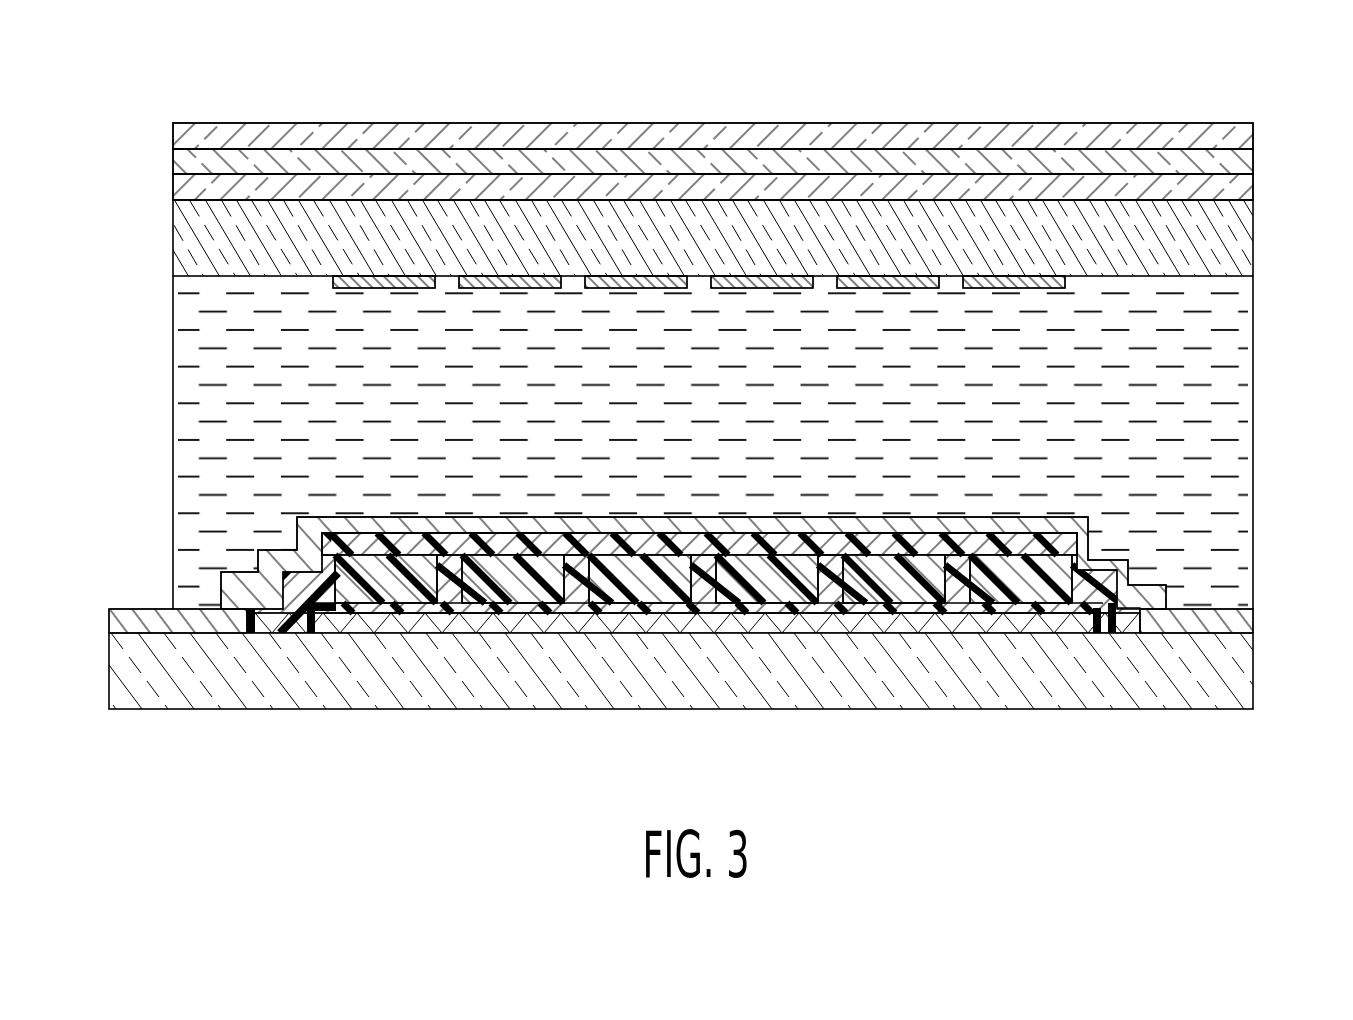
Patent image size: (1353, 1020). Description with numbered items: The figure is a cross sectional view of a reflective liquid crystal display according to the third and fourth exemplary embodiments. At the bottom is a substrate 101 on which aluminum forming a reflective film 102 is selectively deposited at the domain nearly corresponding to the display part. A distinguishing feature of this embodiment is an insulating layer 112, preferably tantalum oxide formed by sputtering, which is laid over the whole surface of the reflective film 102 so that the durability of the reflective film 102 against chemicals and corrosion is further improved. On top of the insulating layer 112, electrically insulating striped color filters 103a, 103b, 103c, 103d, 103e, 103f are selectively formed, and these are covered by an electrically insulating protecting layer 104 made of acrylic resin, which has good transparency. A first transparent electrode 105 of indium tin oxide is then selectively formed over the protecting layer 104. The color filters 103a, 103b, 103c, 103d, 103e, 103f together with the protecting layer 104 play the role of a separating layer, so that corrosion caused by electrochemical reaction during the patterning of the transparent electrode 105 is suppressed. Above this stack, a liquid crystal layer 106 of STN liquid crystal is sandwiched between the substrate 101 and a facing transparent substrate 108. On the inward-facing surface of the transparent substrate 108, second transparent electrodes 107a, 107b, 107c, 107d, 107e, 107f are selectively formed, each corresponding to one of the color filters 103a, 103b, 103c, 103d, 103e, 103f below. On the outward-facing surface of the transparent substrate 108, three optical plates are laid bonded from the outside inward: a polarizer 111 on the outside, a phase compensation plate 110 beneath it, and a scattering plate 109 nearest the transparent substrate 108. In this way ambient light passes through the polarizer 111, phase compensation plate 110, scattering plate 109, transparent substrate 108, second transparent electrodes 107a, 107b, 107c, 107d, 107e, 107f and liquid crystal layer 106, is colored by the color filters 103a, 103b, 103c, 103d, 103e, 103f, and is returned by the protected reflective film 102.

The substrate 101 is at (1250, 685).
The reflective film 102 is at (1053, 633).
The color filter 103a is at (382, 582).
The color filter 103b is at (517, 583).
The color filter 103c is at (643, 583).
The color filter 103d is at (760, 582).
The color filter 103e is at (897, 612).
The color filter 103f is at (1003, 583).
The protecting layer 104 is at (1103, 582).
The first transparent electrode 105 is at (1085, 514).
The liquid crystal layer 106 is at (1235, 354).
The second transparent electrode 107a is at (377, 282).
The second transparent electrode 107b is at (522, 282).
The second transparent electrode 107c is at (645, 282).
The second transparent electrode 107d is at (770, 282).
The second transparent electrode 107e is at (885, 282).
The second transparent electrode 107f is at (1012, 282).
The transparent substrate 108 is at (1253, 225).
The scattering plate 109 is at (1253, 189).
The phase compensation plate 110 is at (1253, 161).
The polarizer 111 is at (1253, 132).
The insulating layer 112 is at (1068, 612).